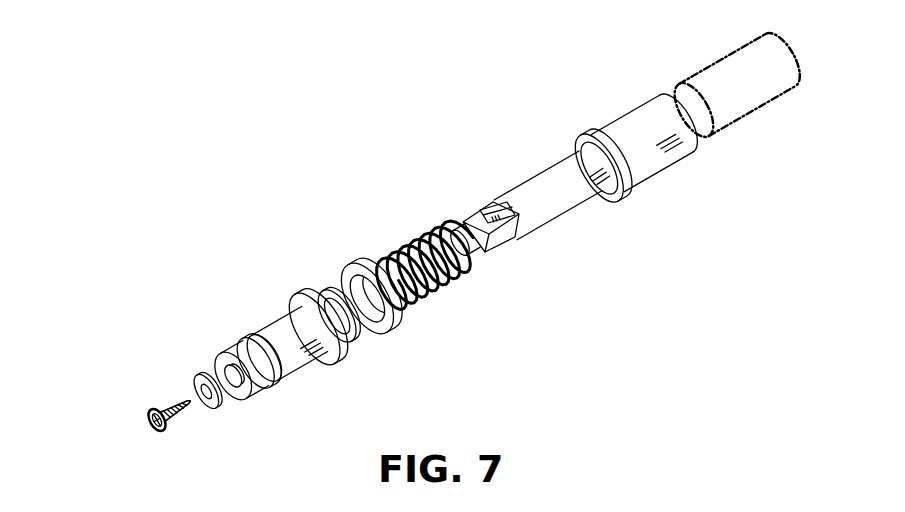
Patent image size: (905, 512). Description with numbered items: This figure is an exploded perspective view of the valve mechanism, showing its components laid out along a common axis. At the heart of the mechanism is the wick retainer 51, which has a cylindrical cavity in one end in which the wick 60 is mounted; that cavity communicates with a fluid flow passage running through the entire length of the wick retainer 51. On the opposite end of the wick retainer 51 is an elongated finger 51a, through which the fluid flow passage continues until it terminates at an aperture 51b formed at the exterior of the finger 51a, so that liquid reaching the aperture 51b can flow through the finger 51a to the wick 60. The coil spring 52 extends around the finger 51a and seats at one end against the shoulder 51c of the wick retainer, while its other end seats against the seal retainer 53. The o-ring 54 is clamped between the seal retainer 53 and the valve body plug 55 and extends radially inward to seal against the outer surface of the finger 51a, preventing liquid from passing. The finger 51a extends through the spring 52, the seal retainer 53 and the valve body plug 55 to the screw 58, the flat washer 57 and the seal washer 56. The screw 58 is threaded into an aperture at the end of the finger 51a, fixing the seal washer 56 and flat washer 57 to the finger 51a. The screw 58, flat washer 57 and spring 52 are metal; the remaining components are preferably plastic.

The wick retainer 51 is at (556, 176).
The elongated finger 51a is at (540, 182).
The aperture 51b is at (481, 216).
The shoulder 51c is at (654, 142).
The coil spring 52 is at (413, 245).
The seal retainer 53 is at (358, 265).
The o-ring 54 is at (352, 340).
The valve body plug 55 is at (300, 305).
The seal washer 56 is at (255, 392).
The flat washer 57 is at (196, 378).
The screw 58 is at (152, 411).
The wick 60 is at (720, 78).